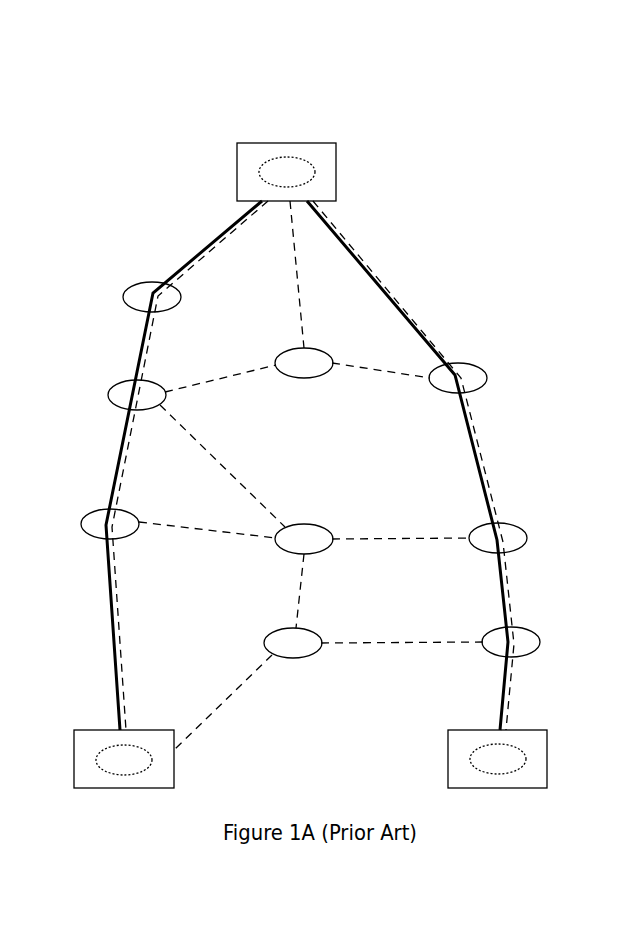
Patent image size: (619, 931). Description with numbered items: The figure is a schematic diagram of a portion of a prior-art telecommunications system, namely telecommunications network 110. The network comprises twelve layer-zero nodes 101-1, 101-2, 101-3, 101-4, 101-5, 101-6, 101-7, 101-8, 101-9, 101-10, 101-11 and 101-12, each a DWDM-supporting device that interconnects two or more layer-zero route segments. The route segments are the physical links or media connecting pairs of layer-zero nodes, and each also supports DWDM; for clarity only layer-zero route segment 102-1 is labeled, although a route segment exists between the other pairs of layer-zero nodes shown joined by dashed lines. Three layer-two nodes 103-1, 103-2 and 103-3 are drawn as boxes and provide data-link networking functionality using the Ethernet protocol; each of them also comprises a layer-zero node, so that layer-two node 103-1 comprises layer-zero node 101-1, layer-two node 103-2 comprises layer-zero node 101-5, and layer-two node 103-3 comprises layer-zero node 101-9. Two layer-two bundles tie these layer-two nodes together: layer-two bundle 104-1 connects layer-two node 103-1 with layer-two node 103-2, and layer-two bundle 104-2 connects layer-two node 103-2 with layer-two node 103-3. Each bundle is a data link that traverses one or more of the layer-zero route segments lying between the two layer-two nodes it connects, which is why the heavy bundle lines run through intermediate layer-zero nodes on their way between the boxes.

The telecommunications network 110 is at (118, 181).
The layer-0 node 101-1 is at (117, 744).
The layer-0 node 101-2 is at (128, 510).
The layer-0 node 101-3 is at (153, 380).
The layer-0 node 101-4 is at (142, 282).
The layer-0 node 101-5 is at (259, 171).
The layer-0 node 101-6 is at (472, 363).
The layer-0 node 101-7 is at (502, 525).
The layer-0 node 101-8 is at (498, 630).
The layer-0 node 101-9 is at (490, 745).
The layer-0 node 101-10 is at (277, 627).
The layer-0 node 101-11 is at (315, 525).
The layer-0 node 101-12 is at (315, 347).
The layer-0 route segment 102-1 is at (177, 528).
The layer-2 node 103-1 is at (137, 730).
The layer-2 node 103-2 is at (336, 163).
The layer-2 node 103-3 is at (448, 762).
The layer-2 bundle 104-1 is at (122, 445).
The layer-2 bundle 104-2 is at (470, 427).